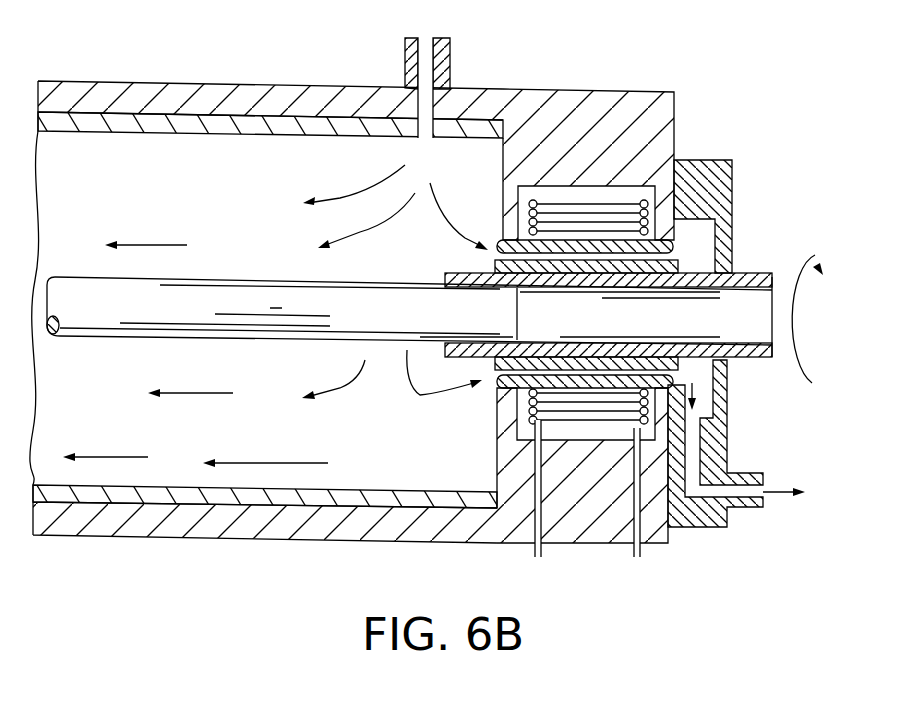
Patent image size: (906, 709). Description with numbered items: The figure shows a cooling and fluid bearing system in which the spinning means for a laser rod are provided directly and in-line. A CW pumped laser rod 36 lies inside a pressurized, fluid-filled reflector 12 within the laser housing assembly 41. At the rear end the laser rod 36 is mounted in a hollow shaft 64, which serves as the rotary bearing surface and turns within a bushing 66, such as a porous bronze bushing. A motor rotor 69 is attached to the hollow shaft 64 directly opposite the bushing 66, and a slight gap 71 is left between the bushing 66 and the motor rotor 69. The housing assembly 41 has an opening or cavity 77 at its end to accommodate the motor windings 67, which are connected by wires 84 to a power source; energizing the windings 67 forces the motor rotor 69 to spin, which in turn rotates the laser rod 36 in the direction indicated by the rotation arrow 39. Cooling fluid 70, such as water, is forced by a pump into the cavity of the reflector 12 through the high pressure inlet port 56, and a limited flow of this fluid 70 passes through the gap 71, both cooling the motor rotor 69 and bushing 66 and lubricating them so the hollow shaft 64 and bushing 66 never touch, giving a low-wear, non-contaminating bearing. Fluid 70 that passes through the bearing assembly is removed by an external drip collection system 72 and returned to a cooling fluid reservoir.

The reflector 12 is at (170, 132).
The laser rod 36 is at (70, 283).
The rotation direction 39 is at (780, 312).
The laser housing assembly 41 is at (296, 81).
The inlet port 56 is at (445, 58).
The hollow shaft 64 is at (753, 273).
The bushing 66 is at (499, 246).
The motor windings 67 is at (636, 207).
The motor rotor 69 is at (517, 338).
The cooling fluid 70 is at (180, 244).
The gap 71 is at (587, 253).
The drip collection system 72 is at (732, 160).
The cavity 77 is at (518, 189).
The wires 84 is at (545, 557).